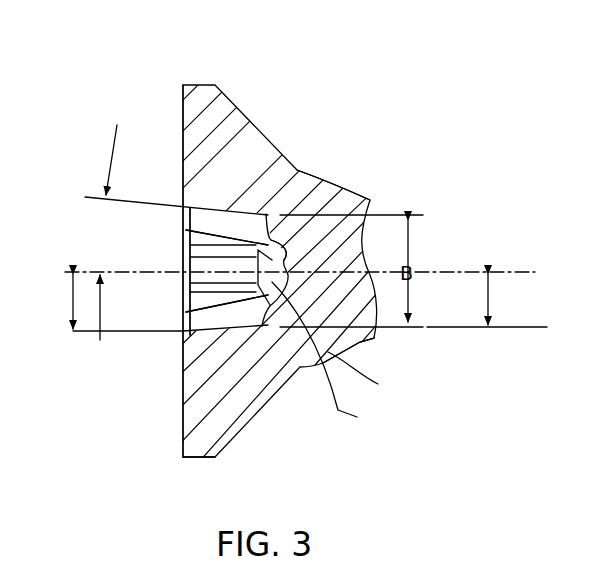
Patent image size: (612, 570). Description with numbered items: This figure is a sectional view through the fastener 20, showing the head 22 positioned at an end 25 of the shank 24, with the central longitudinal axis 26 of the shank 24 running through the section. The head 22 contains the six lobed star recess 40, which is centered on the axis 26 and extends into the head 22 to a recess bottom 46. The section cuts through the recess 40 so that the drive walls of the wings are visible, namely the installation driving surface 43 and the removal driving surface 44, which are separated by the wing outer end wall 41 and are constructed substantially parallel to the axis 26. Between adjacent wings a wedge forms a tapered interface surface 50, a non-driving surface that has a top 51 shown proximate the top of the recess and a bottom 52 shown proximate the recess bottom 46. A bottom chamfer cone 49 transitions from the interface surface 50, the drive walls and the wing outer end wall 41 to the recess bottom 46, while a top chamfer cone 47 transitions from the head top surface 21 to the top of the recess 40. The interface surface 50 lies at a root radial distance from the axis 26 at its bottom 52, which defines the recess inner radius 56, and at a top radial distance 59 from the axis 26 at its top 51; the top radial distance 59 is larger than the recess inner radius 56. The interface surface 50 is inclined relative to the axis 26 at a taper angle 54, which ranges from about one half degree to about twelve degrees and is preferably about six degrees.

The fastener 20 is at (209, 108).
The head top surface 21 is at (180, 116).
The head 22 is at (242, 408).
The shank 24 is at (372, 200).
The end of the shank 25 is at (373, 340).
The central longitudinal axis 26 is at (115, 272).
The six lobed star recess 40 is at (292, 190).
The wing outer end wall 41 is at (185, 272).
The installation driving surface 43 is at (186, 360).
The removal driving surface 44 is at (222, 208).
The recess bottom 46 is at (328, 196).
The top chamfer cone 47 is at (183, 305).
The bottom chamfer cone 49 is at (365, 374).
The interface surface 50 is at (183, 210).
The top of the interface surface 51 is at (182, 236).
The bottom of the interface surface 52 is at (328, 355).
The taper angle 54 is at (110, 150).
The recess inner radius 56 is at (490, 307).
The top radial distance 59 is at (73, 305).